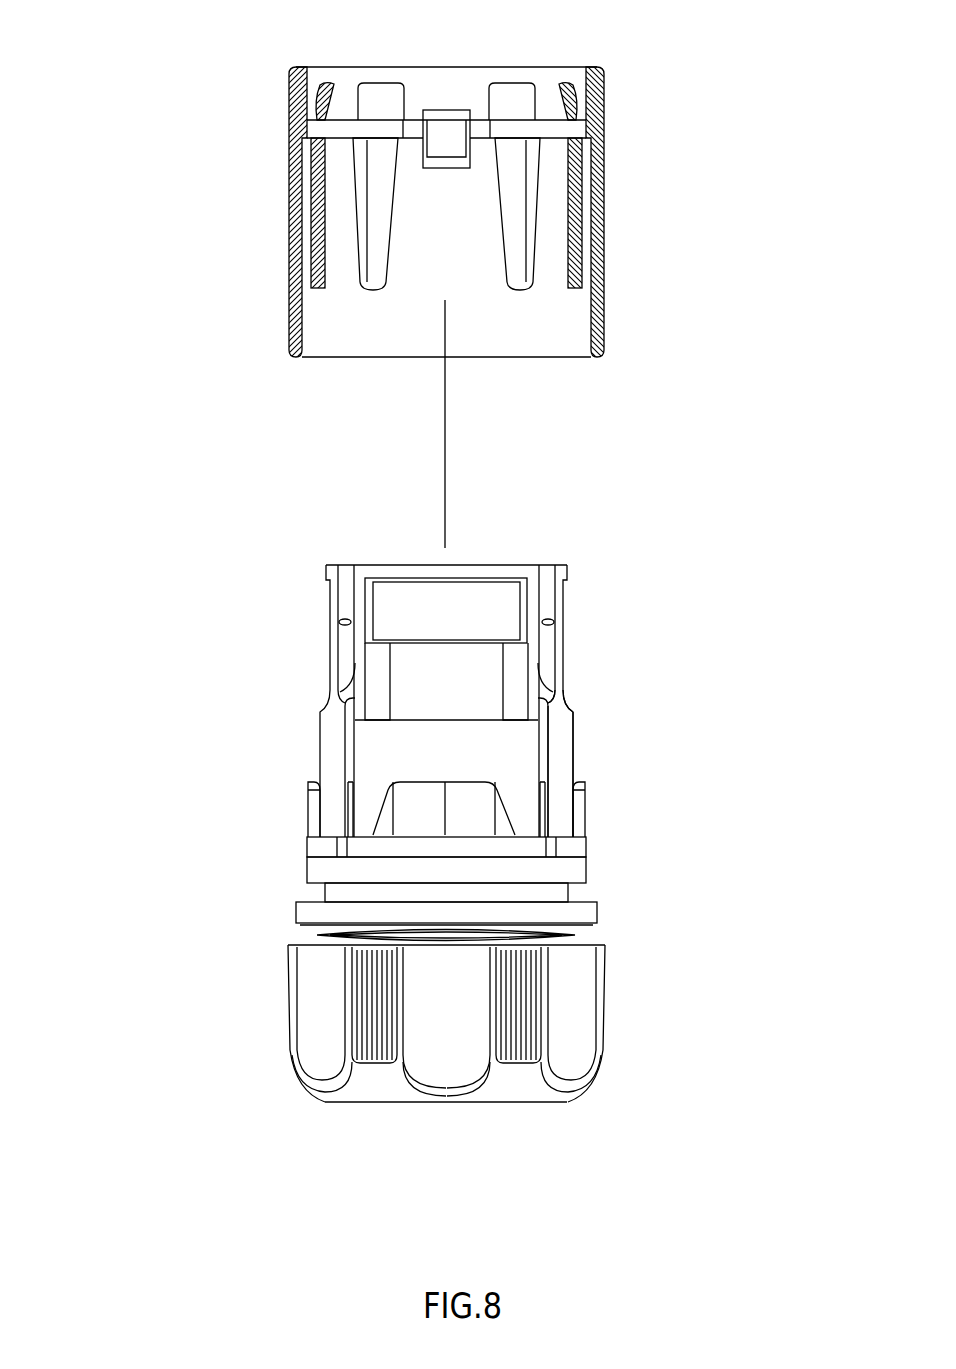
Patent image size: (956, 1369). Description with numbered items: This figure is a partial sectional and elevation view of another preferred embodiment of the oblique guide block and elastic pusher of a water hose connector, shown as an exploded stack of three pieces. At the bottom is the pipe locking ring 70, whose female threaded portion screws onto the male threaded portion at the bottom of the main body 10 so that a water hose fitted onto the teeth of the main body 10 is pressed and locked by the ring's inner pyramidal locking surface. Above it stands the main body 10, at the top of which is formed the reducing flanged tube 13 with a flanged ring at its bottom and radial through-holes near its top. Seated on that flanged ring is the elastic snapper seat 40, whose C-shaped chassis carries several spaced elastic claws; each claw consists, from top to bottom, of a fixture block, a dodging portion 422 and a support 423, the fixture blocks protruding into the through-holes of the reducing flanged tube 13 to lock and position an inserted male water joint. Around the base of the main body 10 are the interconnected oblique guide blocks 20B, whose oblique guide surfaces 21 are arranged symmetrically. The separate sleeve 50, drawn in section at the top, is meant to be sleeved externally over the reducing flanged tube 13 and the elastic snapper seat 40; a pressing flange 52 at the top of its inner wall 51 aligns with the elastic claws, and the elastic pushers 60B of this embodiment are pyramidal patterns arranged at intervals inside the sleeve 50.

The main body 10 is at (290, 592).
The reducing flanged tube 13 is at (565, 612).
The oblique guide block 20B is at (393, 818).
The oblique guide surface 21 is at (386, 806).
The elastic snapper seat 40 is at (312, 725).
The dodging portion 422 is at (549, 670).
The support 423 is at (569, 735).
The sleeve 50 is at (243, 182).
The inner wall 51 is at (553, 318).
The pressing flange 52 is at (448, 145).
The elastic pusher 60B is at (376, 200).
The pipe locking ring 70 is at (283, 1065).